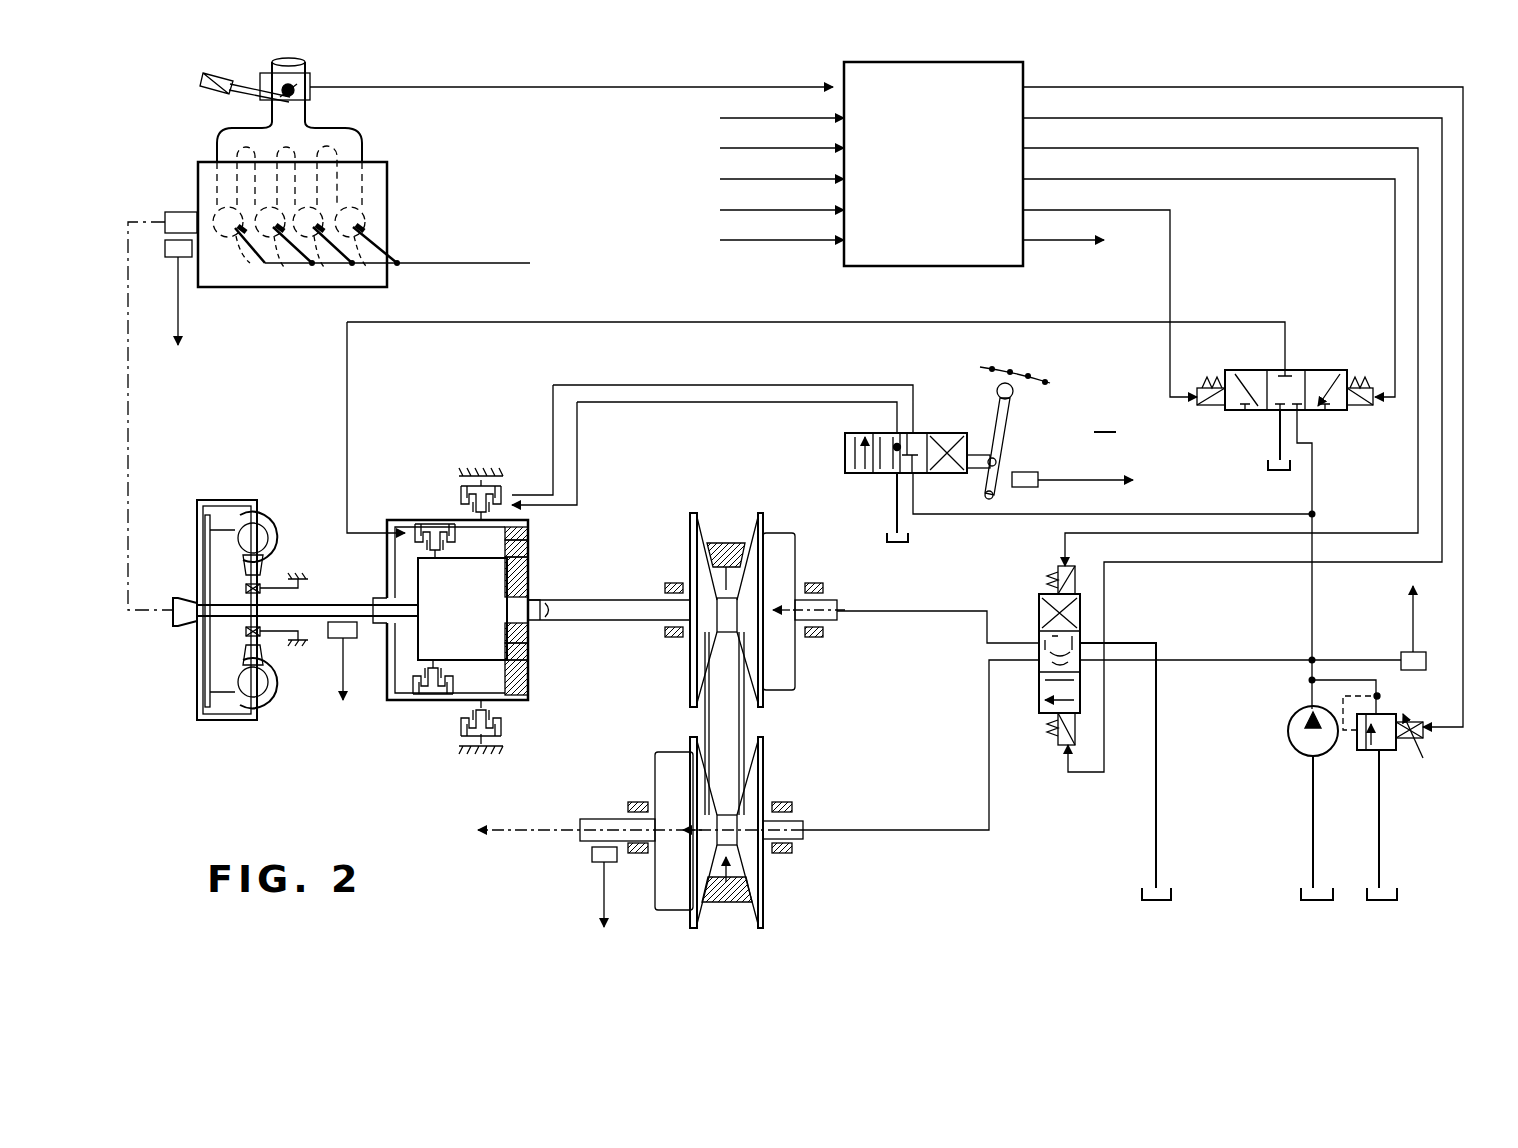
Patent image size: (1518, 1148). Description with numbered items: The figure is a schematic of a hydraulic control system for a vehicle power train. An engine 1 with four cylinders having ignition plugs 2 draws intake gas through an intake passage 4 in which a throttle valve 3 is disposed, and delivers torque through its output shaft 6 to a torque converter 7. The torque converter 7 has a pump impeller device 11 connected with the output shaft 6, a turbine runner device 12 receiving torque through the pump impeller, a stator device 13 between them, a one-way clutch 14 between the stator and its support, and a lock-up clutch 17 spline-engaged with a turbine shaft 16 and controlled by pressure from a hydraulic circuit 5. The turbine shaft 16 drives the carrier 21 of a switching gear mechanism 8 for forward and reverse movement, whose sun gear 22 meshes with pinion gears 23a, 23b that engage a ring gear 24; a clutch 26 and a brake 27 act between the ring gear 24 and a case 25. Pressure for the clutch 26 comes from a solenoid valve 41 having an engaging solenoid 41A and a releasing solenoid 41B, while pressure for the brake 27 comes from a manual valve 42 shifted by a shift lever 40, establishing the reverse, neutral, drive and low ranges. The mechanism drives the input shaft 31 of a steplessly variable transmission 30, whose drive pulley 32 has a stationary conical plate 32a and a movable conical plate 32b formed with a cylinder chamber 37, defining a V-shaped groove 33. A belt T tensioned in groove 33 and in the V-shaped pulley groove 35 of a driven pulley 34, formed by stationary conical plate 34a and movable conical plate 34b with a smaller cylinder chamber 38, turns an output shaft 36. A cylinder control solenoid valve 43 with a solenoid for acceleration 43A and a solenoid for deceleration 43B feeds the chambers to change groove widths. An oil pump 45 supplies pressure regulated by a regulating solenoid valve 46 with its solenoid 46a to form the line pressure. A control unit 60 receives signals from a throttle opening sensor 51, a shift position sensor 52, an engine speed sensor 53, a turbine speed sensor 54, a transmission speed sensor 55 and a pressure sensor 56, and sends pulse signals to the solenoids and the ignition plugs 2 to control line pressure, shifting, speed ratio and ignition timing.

The engine 1 is at (268, 287).
The ignition plugs 2 is at (252, 254).
The throttle valve 3 is at (308, 103).
The intake passage 4 is at (264, 108).
The hydraulic circuit 5 is at (1105, 417).
The output shaft 6 is at (180, 212).
The torque converter 7 is at (278, 502).
The switching gear mechanism 8 is at (400, 710).
The pump impeller device 11 is at (278, 528).
The turbine runner device 12 is at (236, 524).
The stator device 13 is at (268, 558).
The one-way clutch 14 is at (264, 588).
The turbine shaft 16 is at (354, 605).
The lock-up clutch 17 is at (208, 573).
The carrier 21 is at (418, 603).
The sun gear 22 is at (530, 588).
The pinion gear 23a is at (530, 552).
The pinion gear 23b is at (530, 670).
The ring gear 24 is at (530, 534).
The case 25 is at (501, 480).
The clutch 26 is at (432, 517).
The brake 27 is at (454, 480).
The steplessly variable transmission 30 is at (707, 512).
The input shaft 31 is at (612, 621).
The drive pulley 32 is at (684, 677).
The stationary conical plate 32a is at (700, 568).
The movable conical plate 32b is at (761, 554).
The V-shaped groove 33 is at (726, 558).
The driven pulley 34 is at (772, 880).
The stationary conical plate 34a is at (755, 781).
The movable conical plate 34b is at (694, 771).
The V-shaped pulley groove 35 is at (733, 903).
The output shaft 36 is at (553, 828).
The cylinder chamber 37 is at (789, 561).
The cylinder chamber 38 is at (672, 910).
The shift lever 40 is at (1002, 423).
The solenoid valve 41 is at (1304, 352).
The engaging solenoid 41A is at (1243, 410).
The releasing solenoid 41B is at (1340, 388).
The manual valve 42 is at (930, 446).
The cylinder control solenoid valve 43 is at (1019, 621).
The solenoid for acceleration 43A is at (1034, 618).
The solenoid for deceleration 43B is at (1034, 702).
The oil pump 45 is at (1299, 750).
The regulating solenoid valve 46 is at (1365, 750).
The solenoid 46a is at (1407, 740).
The throttle opening sensor 51 is at (310, 86).
The shift position sensor 52 is at (1026, 472).
The engine speed sensor 53 is at (167, 254).
The turbine speed sensor 54 is at (351, 639).
The transmission speed sensor 55 is at (593, 862).
The pressure sensor 56 is at (1408, 652).
The control unit 60 is at (945, 267).
The belt T is at (741, 726).